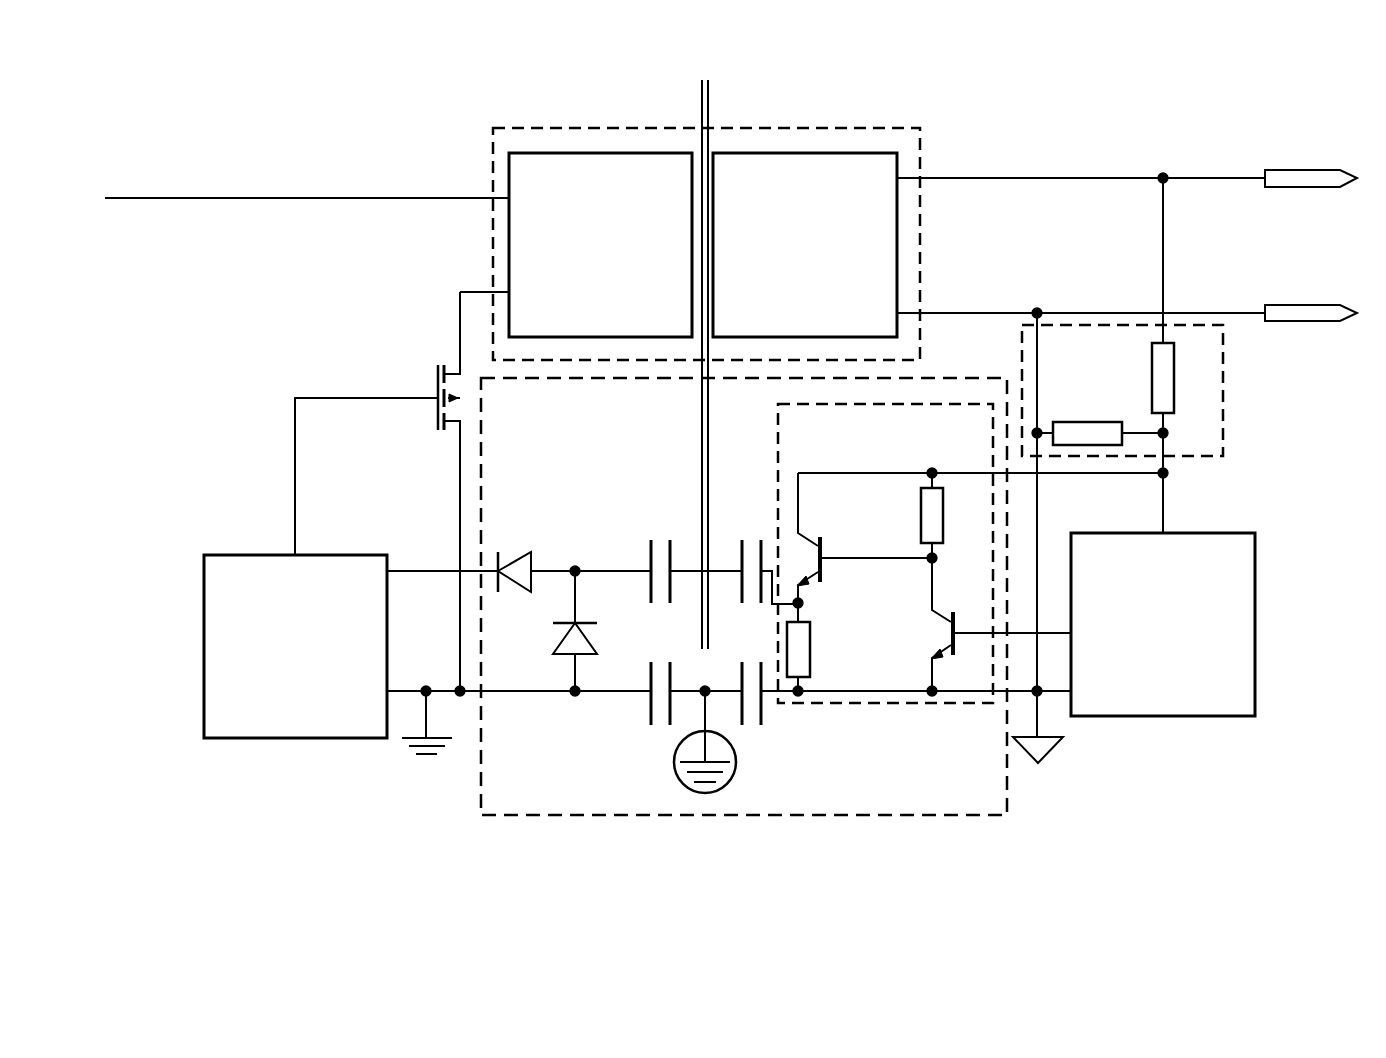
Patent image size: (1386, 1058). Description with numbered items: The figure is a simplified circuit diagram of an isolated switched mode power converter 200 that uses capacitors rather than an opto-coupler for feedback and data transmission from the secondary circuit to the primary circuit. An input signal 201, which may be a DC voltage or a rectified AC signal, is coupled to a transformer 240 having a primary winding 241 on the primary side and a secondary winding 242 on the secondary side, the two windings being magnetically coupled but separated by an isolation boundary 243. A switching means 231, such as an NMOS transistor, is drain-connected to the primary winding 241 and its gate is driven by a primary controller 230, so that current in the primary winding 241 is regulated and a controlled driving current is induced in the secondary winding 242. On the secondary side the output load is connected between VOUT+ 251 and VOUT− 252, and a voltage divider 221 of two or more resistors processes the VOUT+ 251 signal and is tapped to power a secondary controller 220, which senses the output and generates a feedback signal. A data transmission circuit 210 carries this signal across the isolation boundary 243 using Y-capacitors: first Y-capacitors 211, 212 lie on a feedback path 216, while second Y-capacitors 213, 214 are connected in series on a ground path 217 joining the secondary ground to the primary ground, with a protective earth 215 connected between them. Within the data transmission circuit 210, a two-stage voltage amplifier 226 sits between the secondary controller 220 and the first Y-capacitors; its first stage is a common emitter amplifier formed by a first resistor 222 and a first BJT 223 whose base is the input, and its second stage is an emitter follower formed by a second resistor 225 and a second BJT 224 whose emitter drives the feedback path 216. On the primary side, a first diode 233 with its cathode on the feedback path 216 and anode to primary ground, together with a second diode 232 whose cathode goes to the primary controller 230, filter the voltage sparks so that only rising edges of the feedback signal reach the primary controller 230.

The power converter 200 is at (128, 734).
The input signal 201 is at (194, 148).
The data transmission circuit 210 is at (1011, 806).
The first Y-capacitor 211 is at (745, 534).
The first Y-capacitor 212 is at (658, 534).
The second Y-capacitor 213 is at (772, 719).
The second Y-capacitor 214 is at (653, 732).
The protective earth 215 is at (749, 770).
The feedback path 216 is at (688, 580).
The ground path 217 is at (727, 686).
The secondary controller 220 is at (1259, 624).
The voltage divider 221 is at (1226, 428).
The first resistor 222 is at (915, 512).
The first BJT 223 is at (968, 614).
The second BJT 224 is at (826, 509).
The second resistor 225 is at (816, 648).
The two-stage voltage amplifier 226 is at (954, 401).
The primary controller 230 is at (200, 603).
The switching means 231 is at (415, 373).
The second diode 232 is at (540, 548).
The first diode 233 is at (586, 612).
The transformer 240 is at (490, 237).
The primary winding 241 is at (615, 150).
The secondary winding 242 is at (853, 150).
The isolation boundary 243 is at (714, 99).
The VOUT+ 251 is at (1283, 120).
The VOUT− 252 is at (1283, 258).